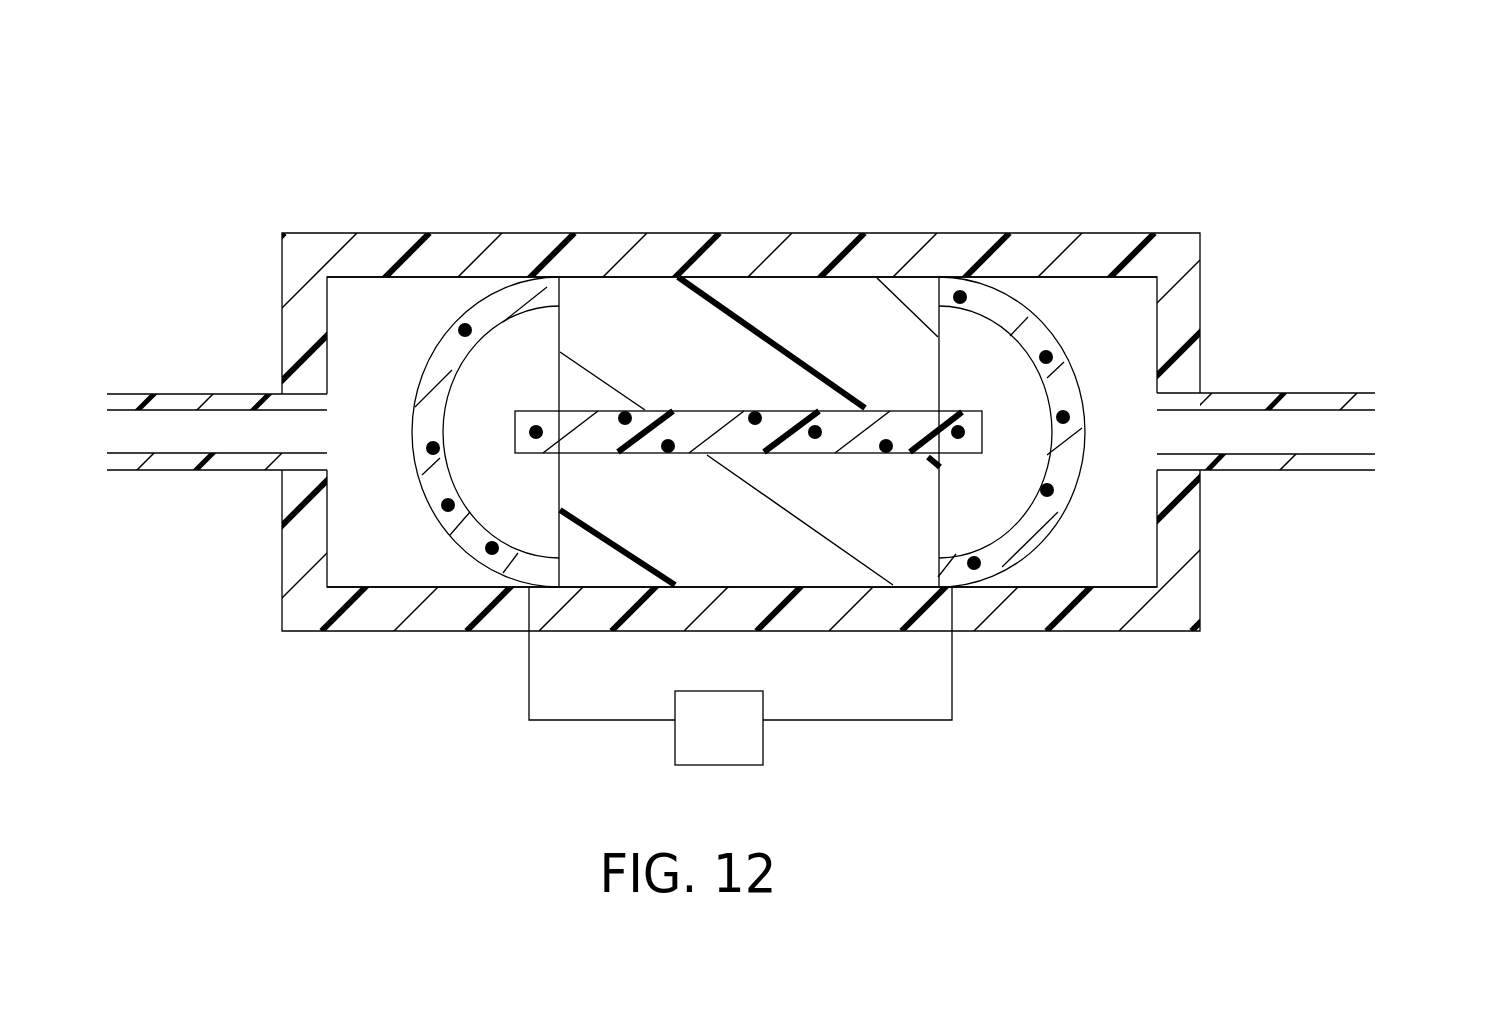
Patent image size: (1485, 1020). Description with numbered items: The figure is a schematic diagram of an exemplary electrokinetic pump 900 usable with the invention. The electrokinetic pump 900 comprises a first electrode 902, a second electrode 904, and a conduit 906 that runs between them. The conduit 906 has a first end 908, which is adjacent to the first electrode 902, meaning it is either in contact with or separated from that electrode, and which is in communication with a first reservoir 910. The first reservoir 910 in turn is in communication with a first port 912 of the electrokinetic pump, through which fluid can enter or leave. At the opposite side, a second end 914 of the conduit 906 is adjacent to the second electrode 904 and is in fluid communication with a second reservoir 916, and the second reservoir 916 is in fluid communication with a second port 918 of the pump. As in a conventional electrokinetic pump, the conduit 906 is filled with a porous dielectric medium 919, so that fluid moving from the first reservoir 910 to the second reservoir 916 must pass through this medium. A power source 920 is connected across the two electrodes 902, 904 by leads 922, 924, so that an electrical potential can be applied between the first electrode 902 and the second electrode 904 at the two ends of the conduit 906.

The electrokinetic pump 900 is at (740, 182).
The first electrode 902 is at (500, 307).
The second electrode 904 is at (953, 292).
The conduit 906 is at (788, 412).
The first end 908 is at (538, 428).
The first reservoir 910 is at (355, 307).
The first port 912 is at (107, 438).
The second end 914 is at (959, 415).
The second reservoir 916 is at (1113, 307).
The second port 918 is at (1333, 424).
The porous dielectric medium 919 is at (687, 423).
The power source 920 is at (733, 720).
The lead 922 is at (530, 703).
The lead 924 is at (952, 703).